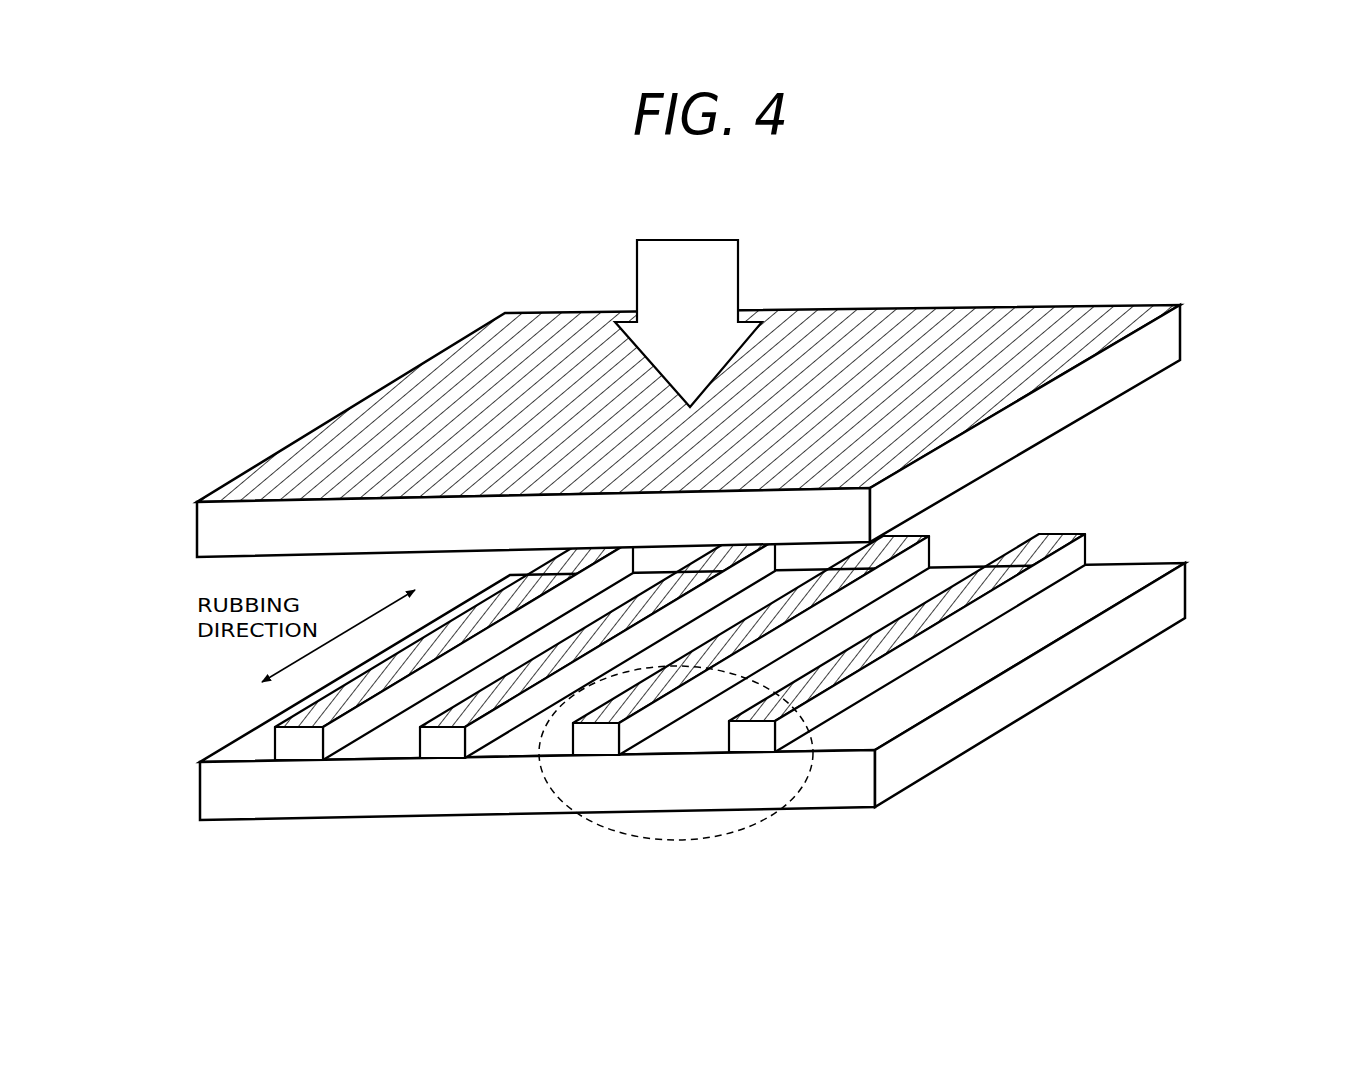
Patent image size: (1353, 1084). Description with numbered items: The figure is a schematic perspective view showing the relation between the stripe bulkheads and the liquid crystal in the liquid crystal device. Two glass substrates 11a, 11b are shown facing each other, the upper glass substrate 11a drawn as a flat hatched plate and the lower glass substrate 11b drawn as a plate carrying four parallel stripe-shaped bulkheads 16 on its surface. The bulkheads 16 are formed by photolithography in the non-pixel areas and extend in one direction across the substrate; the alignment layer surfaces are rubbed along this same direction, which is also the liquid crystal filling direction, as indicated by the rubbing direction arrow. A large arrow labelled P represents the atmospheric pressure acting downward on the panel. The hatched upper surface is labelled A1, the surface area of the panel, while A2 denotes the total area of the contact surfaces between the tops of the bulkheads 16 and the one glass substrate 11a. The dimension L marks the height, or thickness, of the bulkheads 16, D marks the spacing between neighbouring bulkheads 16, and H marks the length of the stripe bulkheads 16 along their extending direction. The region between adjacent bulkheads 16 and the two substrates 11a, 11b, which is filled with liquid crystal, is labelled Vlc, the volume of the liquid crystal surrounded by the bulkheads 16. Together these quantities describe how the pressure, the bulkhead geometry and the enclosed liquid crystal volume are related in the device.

The glass substrate 11a is at (1170, 338).
The glass substrate 11b is at (1180, 592).
The bulkhead structures 16 is at (440, 746).
The surface area of the panel A1 is at (845, 315).
The total area of contact surfaces A2 is at (575, 552).
The atmospheric pressure P is at (688, 290).
The height of the bulkheads L is at (275, 727).
The spacing of the bulkheads D is at (573, 755).
The length of the stripe bulkheads H is at (875, 807).
The volume of the liquid crystal Vlc is at (365, 750).